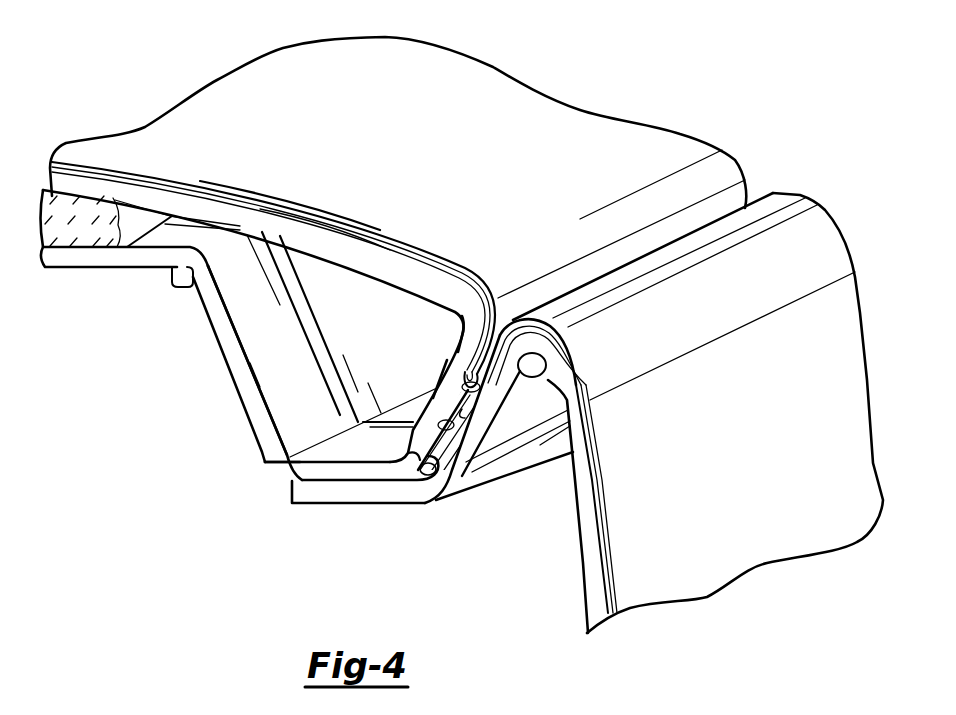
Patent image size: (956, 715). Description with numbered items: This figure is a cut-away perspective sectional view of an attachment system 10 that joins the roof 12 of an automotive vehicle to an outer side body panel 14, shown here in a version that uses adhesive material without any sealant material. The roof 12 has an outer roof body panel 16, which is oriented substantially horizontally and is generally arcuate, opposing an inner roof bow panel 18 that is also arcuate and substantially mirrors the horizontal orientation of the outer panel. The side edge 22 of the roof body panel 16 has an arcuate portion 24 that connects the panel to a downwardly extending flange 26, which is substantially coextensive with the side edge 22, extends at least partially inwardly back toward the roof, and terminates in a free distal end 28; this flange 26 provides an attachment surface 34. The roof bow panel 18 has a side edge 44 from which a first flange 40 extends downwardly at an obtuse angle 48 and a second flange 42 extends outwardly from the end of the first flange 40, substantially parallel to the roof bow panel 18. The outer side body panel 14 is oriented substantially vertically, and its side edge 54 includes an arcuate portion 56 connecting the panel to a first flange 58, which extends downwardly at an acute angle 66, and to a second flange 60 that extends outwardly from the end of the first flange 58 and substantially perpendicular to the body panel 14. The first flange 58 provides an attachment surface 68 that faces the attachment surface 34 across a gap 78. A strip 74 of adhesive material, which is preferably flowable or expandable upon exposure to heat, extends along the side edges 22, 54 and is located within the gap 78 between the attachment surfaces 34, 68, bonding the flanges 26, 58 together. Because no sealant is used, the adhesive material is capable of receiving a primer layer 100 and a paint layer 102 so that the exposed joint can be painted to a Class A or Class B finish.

The attachment system 10 is at (178, 462).
The roof 12 is at (497, 59).
The outer side body panel 14 is at (703, 503).
The outer roof body panel 16 is at (344, 146).
The roof bow panel 18 is at (296, 362).
The side edge 22 is at (447, 323).
The arcuate portion 24 is at (487, 297).
The downwardly extending flange 26 is at (438, 394).
The distal end 28 is at (415, 452).
The attachment surface 34 is at (408, 435).
The first flange 40 is at (223, 338).
The second flange 42 is at (285, 468).
The side edge 44 is at (163, 238).
The obtuse angle 48 is at (178, 281).
The side edge 54 is at (549, 478).
The arcuate portion 56 is at (553, 350).
The first flange 58 is at (472, 440).
The second flange 60 is at (323, 493).
The acute angle 66 is at (537, 378).
The attachment surface 68 is at (428, 470).
The strip of adhesive material 74 is at (463, 411).
The gap 78 is at (488, 356).
The primer layer 100 is at (296, 215).
The paint layer 102 is at (368, 238).